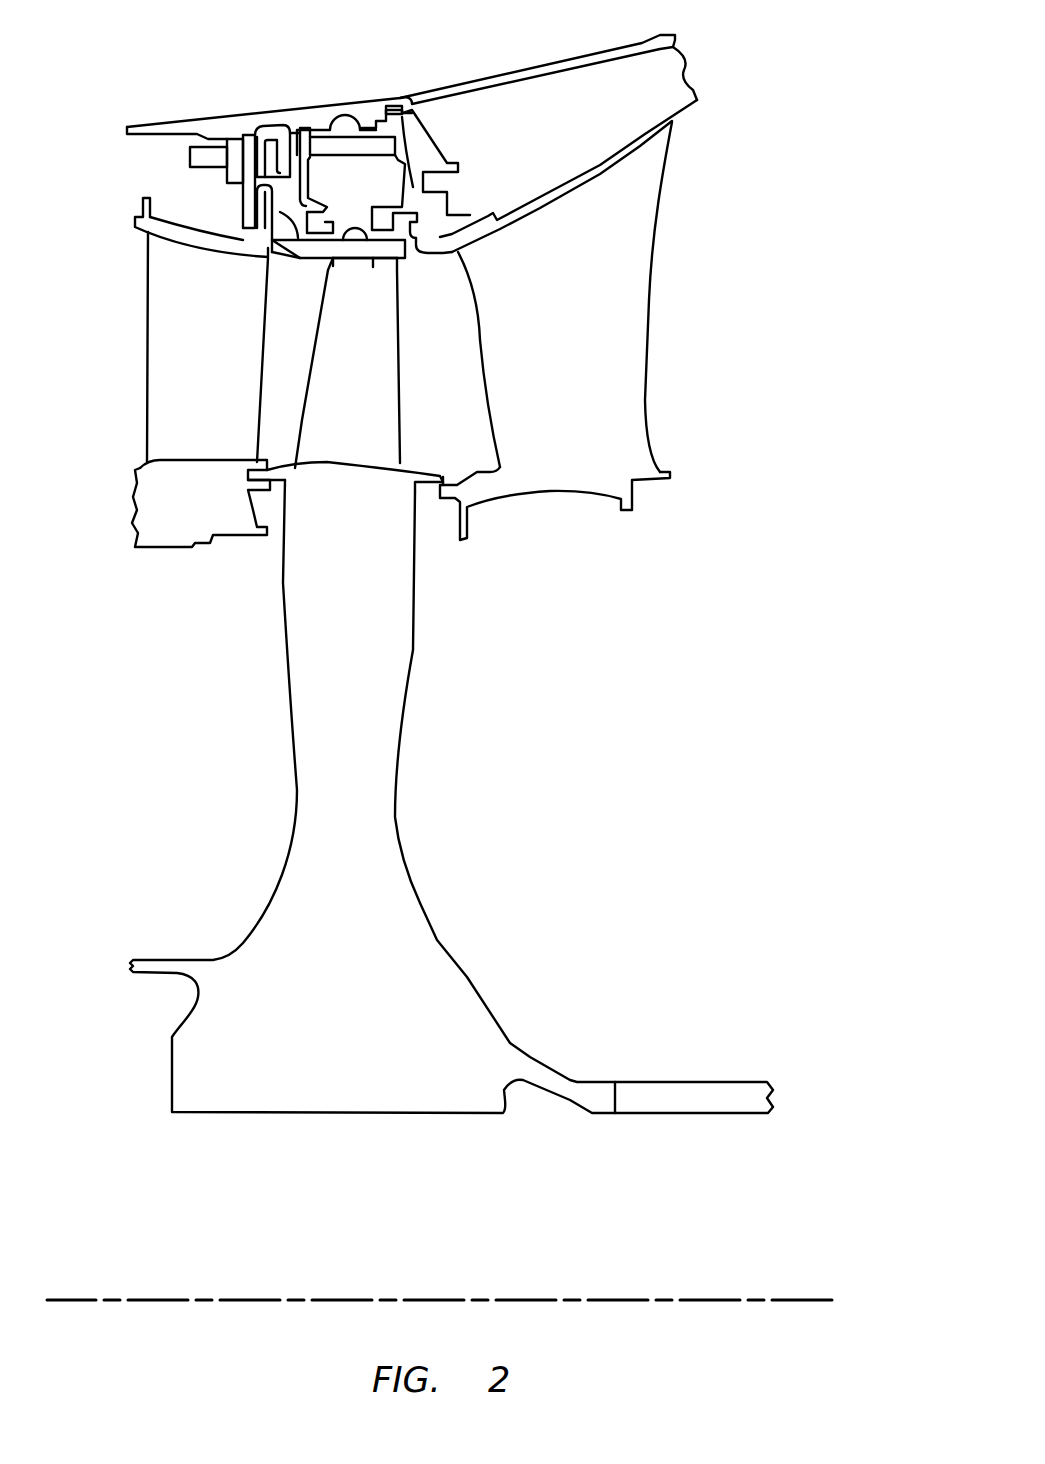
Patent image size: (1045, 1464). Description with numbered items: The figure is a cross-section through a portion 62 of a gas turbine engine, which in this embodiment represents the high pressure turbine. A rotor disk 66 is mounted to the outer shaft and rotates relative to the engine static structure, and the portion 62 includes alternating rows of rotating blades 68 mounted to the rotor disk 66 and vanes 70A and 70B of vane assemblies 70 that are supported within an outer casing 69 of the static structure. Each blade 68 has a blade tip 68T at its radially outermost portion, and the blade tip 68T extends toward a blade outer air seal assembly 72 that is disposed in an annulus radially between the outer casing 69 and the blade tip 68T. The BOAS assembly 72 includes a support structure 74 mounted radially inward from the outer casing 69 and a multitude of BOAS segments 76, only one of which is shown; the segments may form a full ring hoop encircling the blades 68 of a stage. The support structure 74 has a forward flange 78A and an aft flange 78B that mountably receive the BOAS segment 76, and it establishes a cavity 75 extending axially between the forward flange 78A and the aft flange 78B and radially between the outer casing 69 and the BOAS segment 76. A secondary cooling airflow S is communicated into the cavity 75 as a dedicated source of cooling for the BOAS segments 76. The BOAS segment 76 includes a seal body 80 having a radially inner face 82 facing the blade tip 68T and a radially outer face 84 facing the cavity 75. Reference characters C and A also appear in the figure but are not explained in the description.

The portion of a gas turbine engine 62 is at (741, 102).
The rotor disk 66 is at (436, 927).
The rotating blade 68 is at (366, 414).
The blade tip 68T is at (357, 263).
The outer casing 69 is at (393, 103).
The vane assembly 70 is at (118, 516).
The vane 70A is at (225, 357).
The vane 70B is at (598, 340).
The blade outer air seal assembly 72 is at (311, 270).
The support structure 74 is at (370, 143).
The cavity 75 is at (360, 180).
The BOAS segment 76 is at (245, 220).
The forward flange 78A is at (300, 190).
The aft flange 78B is at (413, 187).
The seal body 80 is at (430, 232).
The radially inner face 82 is at (373, 262).
The radially outer face 84 is at (340, 243).
The secondary cooling airflow S is at (347, 199).
The core flow direction C is at (290, 393).
The engine central axis A is at (816, 1300).